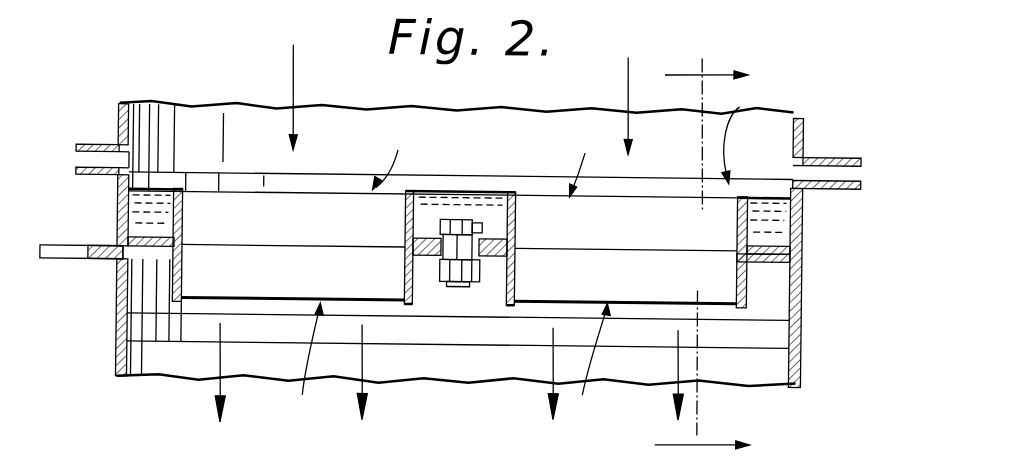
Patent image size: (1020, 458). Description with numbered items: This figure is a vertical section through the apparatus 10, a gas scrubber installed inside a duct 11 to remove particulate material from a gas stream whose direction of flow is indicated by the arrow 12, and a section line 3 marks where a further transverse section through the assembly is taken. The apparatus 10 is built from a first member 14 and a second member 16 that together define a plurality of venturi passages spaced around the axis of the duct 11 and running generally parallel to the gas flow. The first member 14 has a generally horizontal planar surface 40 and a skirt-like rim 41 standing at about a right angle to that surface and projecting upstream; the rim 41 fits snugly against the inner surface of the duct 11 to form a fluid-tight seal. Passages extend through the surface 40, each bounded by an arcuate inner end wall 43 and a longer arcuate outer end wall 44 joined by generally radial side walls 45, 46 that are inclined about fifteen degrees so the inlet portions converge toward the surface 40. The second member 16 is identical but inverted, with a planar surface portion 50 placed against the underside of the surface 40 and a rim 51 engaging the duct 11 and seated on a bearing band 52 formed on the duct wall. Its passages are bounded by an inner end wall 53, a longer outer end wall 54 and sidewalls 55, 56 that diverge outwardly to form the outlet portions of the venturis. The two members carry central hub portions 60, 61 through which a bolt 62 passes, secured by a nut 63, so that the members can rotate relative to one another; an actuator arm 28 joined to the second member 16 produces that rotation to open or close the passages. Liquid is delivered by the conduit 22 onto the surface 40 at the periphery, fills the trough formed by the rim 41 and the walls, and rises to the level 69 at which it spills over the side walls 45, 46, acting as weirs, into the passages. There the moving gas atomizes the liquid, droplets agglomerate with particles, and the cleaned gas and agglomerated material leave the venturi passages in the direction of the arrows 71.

The section line 3- 3 is at (705, 242).
The apparatus 10 is at (739, 133).
The duct 11 is at (799, 118).
The arrow indicating direction of gas flow 12 is at (291, 46).
The first member 14 is at (476, 163).
The second member 16 is at (455, 362).
The liquid distributing conduit 22 is at (89, 145).
The actuator arm 28 is at (50, 260).
The planar surface 40 is at (784, 250).
The rim 41 is at (117, 204).
The inner end wall 43 is at (411, 188).
The outer end wall 44 is at (182, 193).
The side wall 45 is at (275, 202).
The side wall 46 is at (673, 203).
The planar surface portion 50 is at (796, 284).
The rim 51 is at (119, 291).
The bearing band 52 is at (797, 337).
The inner end wall 53 is at (411, 310).
The outer end wall 54 is at (176, 304).
The sidewall 55 is at (251, 293).
The sidewall 56 is at (659, 287).
The central hub portion 60 is at (483, 225).
The central hub portion 61 is at (481, 265).
The bolt 62 is at (450, 217).
The nut 63 is at (440, 266).
The liquid level 69 is at (151, 189).
The arrows indicating outlet flow direction 71 is at (229, 385).